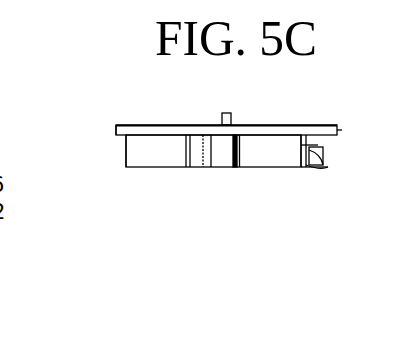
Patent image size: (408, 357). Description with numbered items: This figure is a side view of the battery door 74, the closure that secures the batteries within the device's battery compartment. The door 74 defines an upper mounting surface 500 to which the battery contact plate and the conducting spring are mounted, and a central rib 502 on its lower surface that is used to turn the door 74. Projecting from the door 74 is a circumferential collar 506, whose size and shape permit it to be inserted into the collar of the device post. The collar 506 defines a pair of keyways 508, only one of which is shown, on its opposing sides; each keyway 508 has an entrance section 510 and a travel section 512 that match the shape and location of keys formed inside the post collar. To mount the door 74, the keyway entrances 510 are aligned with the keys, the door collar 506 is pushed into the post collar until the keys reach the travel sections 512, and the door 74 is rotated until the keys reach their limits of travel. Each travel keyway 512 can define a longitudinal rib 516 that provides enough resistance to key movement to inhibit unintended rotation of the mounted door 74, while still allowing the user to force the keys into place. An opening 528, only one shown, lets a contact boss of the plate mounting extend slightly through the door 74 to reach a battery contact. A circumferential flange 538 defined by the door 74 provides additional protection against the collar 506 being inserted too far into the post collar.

The upper mounting surface 500 is at (272, 167).
The central rib 502 is at (221, 113).
The circumferential collar 506 is at (150, 157).
The keyway 508 is at (323, 167).
The entrance section 510 is at (303, 166).
The travel section 512 is at (325, 156).
The longitudinal rib 516 is at (337, 134).
The opening 528 is at (230, 165).
The circumferential flange 538 is at (120, 125).
The battery door 74 is at (275, 125).